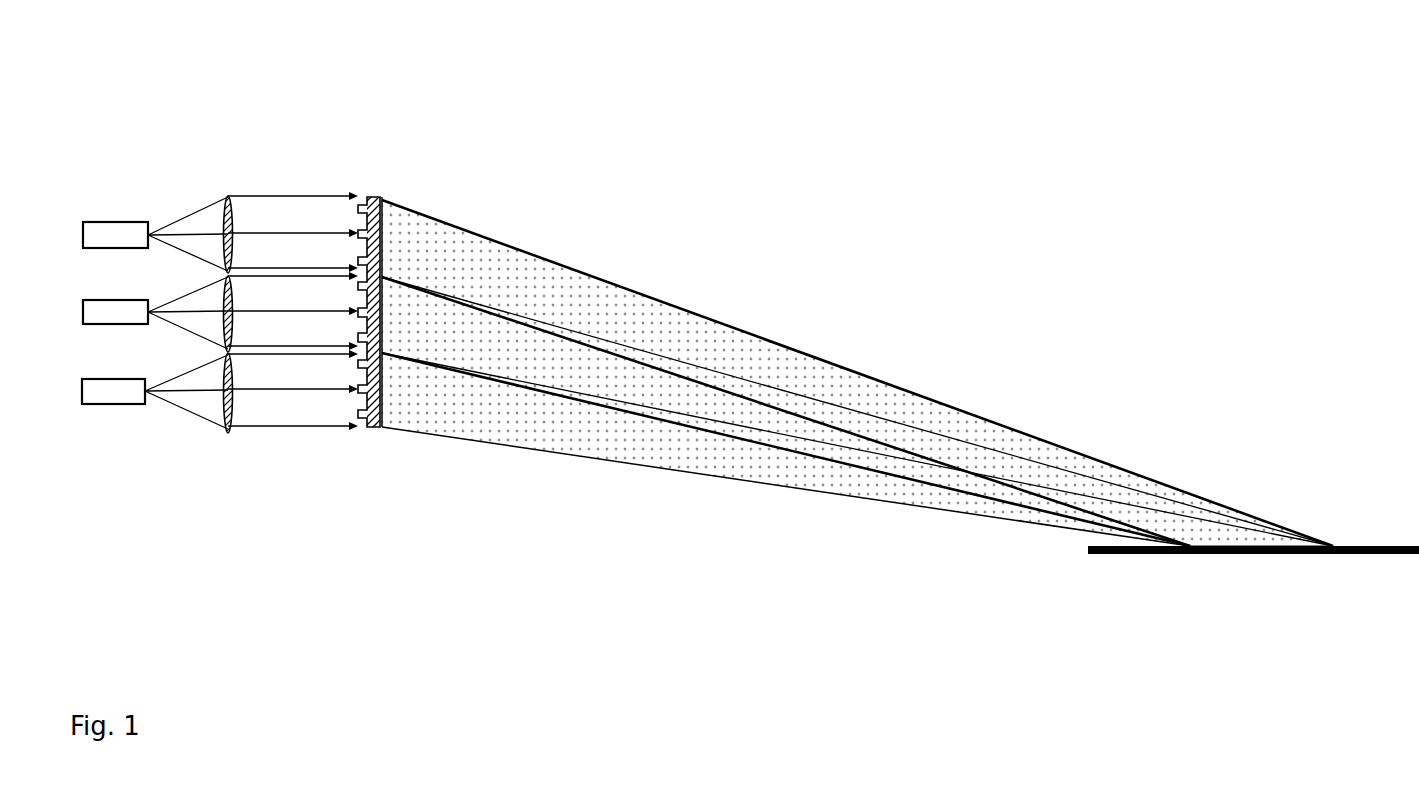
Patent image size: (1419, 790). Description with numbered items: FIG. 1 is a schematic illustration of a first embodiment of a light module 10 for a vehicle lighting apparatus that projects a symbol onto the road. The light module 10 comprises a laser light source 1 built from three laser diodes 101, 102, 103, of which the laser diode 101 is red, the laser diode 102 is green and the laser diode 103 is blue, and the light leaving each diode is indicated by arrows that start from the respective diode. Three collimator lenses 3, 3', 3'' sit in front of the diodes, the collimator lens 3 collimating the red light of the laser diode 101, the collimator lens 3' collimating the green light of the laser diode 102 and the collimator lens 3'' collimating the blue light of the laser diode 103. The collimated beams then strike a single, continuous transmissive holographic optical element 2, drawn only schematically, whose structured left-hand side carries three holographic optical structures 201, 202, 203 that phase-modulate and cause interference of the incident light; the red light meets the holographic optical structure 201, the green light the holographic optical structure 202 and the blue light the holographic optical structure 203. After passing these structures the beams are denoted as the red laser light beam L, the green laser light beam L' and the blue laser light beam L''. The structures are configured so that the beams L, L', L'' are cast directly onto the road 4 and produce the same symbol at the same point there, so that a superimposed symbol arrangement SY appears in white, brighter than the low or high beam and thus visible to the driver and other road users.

The laser light source 1 is at (88, 170).
The light module 10 is at (345, 84).
The transmissive holographic optical element 2 is at (375, 196).
The collimator lens 3 is at (251, 234).
The collimator lens 3' is at (249, 314).
The collimator lens 3'' is at (251, 393).
The laser diode 101 is at (123, 221).
The laser diode 102 is at (123, 299).
The laser diode 103 is at (122, 378).
The holographic optical structure 201 is at (390, 240).
The holographic optical structure 202 is at (390, 317).
The holographic optical structure 203 is at (390, 392).
The red laser light beam L is at (857, 373).
The green laser light beam L' is at (857, 411).
The blue laser light beam L'' is at (786, 449).
The road 4 is at (1181, 556).
The symbol arrangement SY is at (1280, 546).